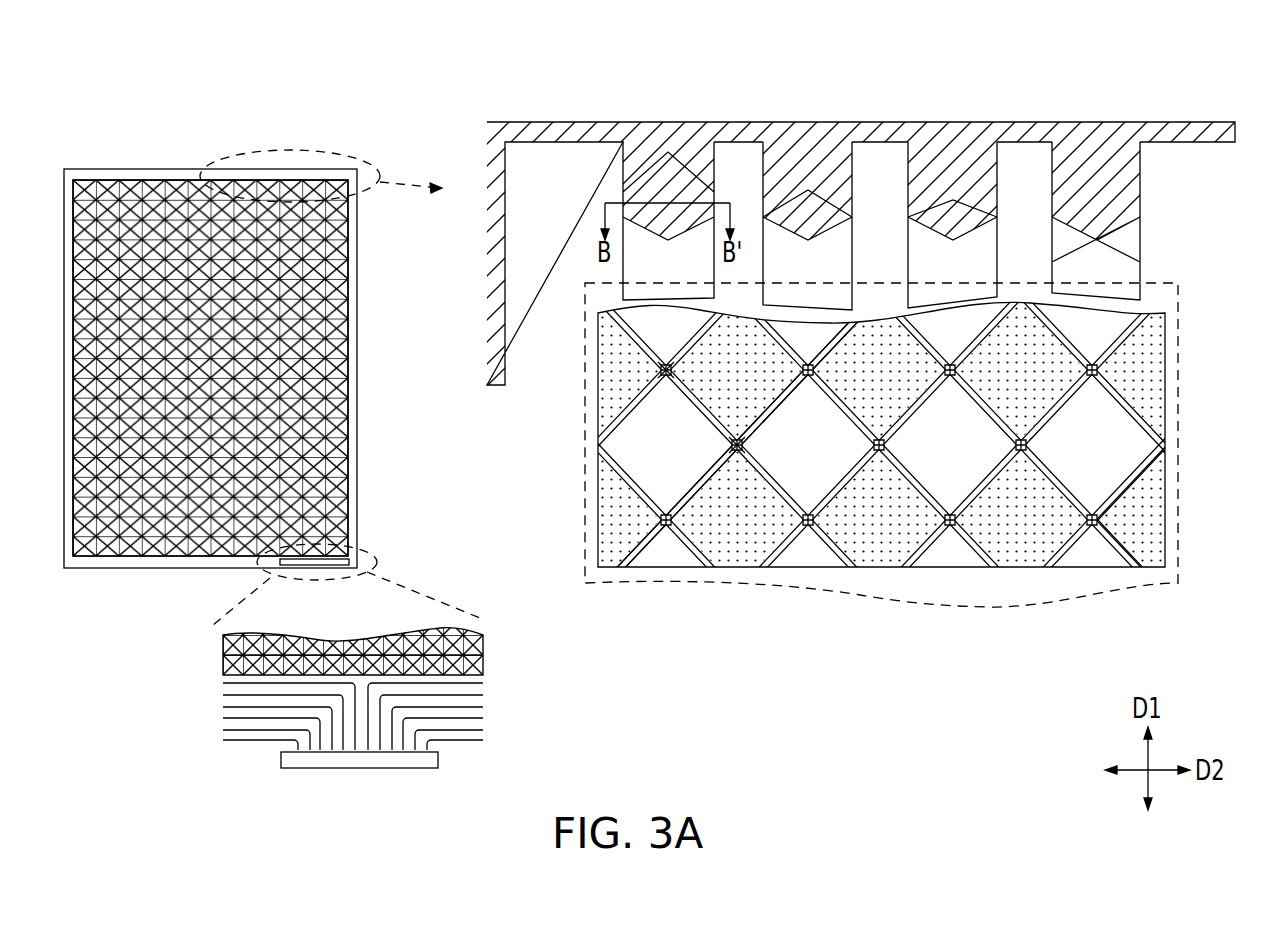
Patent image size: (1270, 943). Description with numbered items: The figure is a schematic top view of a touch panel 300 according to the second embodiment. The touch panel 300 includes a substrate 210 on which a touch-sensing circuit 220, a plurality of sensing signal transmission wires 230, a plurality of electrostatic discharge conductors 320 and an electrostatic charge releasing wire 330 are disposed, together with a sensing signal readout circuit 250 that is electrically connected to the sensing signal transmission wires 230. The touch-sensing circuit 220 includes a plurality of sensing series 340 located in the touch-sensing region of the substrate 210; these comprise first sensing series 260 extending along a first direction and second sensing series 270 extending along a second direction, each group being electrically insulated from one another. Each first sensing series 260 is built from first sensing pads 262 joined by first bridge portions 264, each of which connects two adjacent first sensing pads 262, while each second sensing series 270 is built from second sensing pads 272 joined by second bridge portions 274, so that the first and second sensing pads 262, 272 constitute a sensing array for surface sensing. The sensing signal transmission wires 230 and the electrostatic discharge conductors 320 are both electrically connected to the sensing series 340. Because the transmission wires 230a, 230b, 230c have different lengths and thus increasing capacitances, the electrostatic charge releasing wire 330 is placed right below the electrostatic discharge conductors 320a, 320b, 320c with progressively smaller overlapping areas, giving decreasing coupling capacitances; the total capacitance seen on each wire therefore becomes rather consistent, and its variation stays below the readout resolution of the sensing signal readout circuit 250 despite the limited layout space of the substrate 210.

The touch panel 300 is at (210, 315).
The substrate 210 is at (170, 176).
The electrostatic charge releasing wire 330 is at (861, 223).
The electrostatic discharge conductors 320 is at (828, 226).
The electrostatic discharge conductor 320a is at (635, 278).
The electrostatic discharge conductor 320b is at (842, 267).
The electrostatic discharge conductor 320c is at (982, 225).
The touch-sensing circuit 220 is at (789, 459).
The first sensing series 260 is at (789, 481).
The first sensing pads 262 is at (610, 368).
The first bridge portions 264 is at (660, 363).
The second sensing series 270 is at (789, 481).
The second sensing pads 272 is at (655, 485).
The second bridge portions 274 is at (698, 523).
The sensing series 340 is at (1143, 526).
The sensing signal transmission wires 230 is at (424, 692).
The sensing signal transmission wire 230a is at (473, 682).
The sensing signal transmission wire 230b is at (475, 705).
The sensing signal transmission wire 230c is at (475, 742).
The sensing signal readout circuit 250 is at (432, 760).